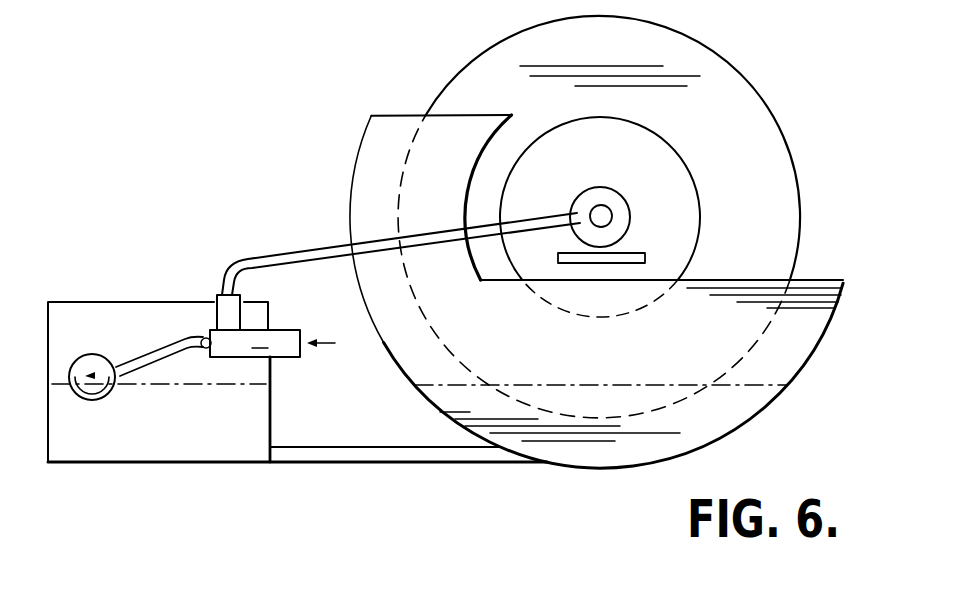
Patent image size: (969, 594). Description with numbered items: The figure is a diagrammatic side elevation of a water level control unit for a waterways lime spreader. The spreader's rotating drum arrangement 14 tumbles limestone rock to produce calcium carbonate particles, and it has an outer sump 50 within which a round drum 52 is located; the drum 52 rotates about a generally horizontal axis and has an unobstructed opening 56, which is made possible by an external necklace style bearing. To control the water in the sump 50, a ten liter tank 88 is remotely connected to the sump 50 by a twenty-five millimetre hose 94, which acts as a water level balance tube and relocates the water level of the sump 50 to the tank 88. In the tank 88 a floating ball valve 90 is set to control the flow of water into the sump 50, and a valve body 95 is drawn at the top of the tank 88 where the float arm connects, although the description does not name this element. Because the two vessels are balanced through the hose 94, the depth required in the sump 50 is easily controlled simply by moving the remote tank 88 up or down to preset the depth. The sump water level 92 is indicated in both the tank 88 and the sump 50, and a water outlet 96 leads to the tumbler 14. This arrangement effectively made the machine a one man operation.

The rotating drum arrangement 14 is at (668, 241).
The outer sump 50 is at (368, 158).
The drum 52 is at (470, 88).
The unobstructed opening 56 is at (680, 161).
The tank 88 is at (176, 440).
The floating ball valve 90 is at (95, 365).
The sump water level 92 is at (202, 386).
The hose 94 is at (370, 452).
The valve 95 is at (277, 343).
The water outlet 96 is at (306, 248).